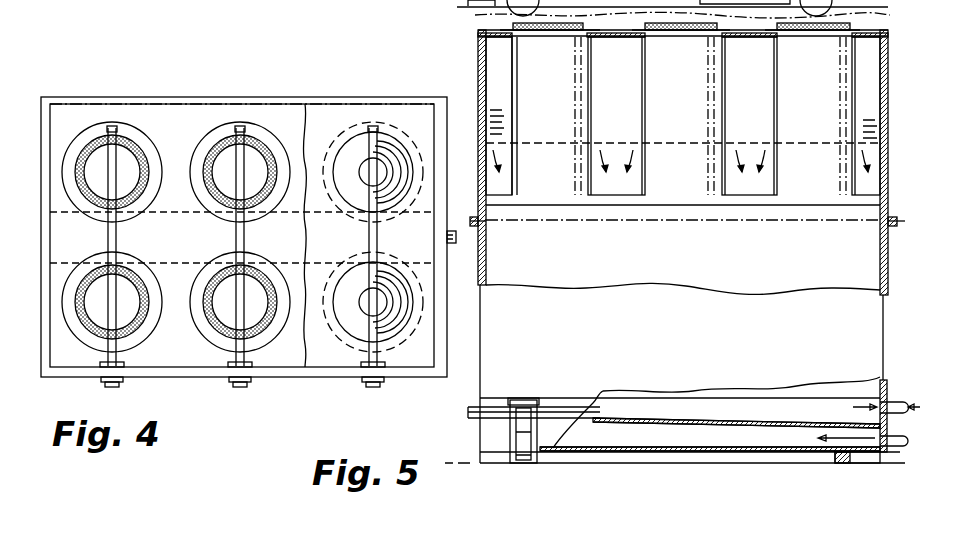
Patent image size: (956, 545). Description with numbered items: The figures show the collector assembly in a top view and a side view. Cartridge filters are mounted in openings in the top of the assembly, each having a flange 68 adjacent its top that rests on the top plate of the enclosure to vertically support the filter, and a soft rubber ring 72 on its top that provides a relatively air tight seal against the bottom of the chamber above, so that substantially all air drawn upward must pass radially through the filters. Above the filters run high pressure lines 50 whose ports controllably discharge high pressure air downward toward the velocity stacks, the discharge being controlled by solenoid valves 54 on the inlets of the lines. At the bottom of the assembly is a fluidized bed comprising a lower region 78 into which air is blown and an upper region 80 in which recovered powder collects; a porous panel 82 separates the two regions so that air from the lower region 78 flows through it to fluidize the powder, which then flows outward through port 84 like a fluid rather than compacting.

In FIG. 4, the high pressure lines 50 is at (108, 233).
In FIG. 4, the solenoid valves 54 is at (102, 384).
In FIG. 4, the flange 68 is at (72, 124).
In FIG. 5, the flange 68 is at (862, 32).
In FIG. 4, the soft rubber ring 72 is at (94, 140).
In FIG. 5, the soft rubber ring 72 is at (512, 24).
In FIG. 5, the lower region 78 is at (632, 430).
In FIG. 5, the upper region 80 is at (822, 400).
In FIG. 5, the porous panel 82 is at (692, 418).
In FIG. 5, the port 84 is at (896, 400).